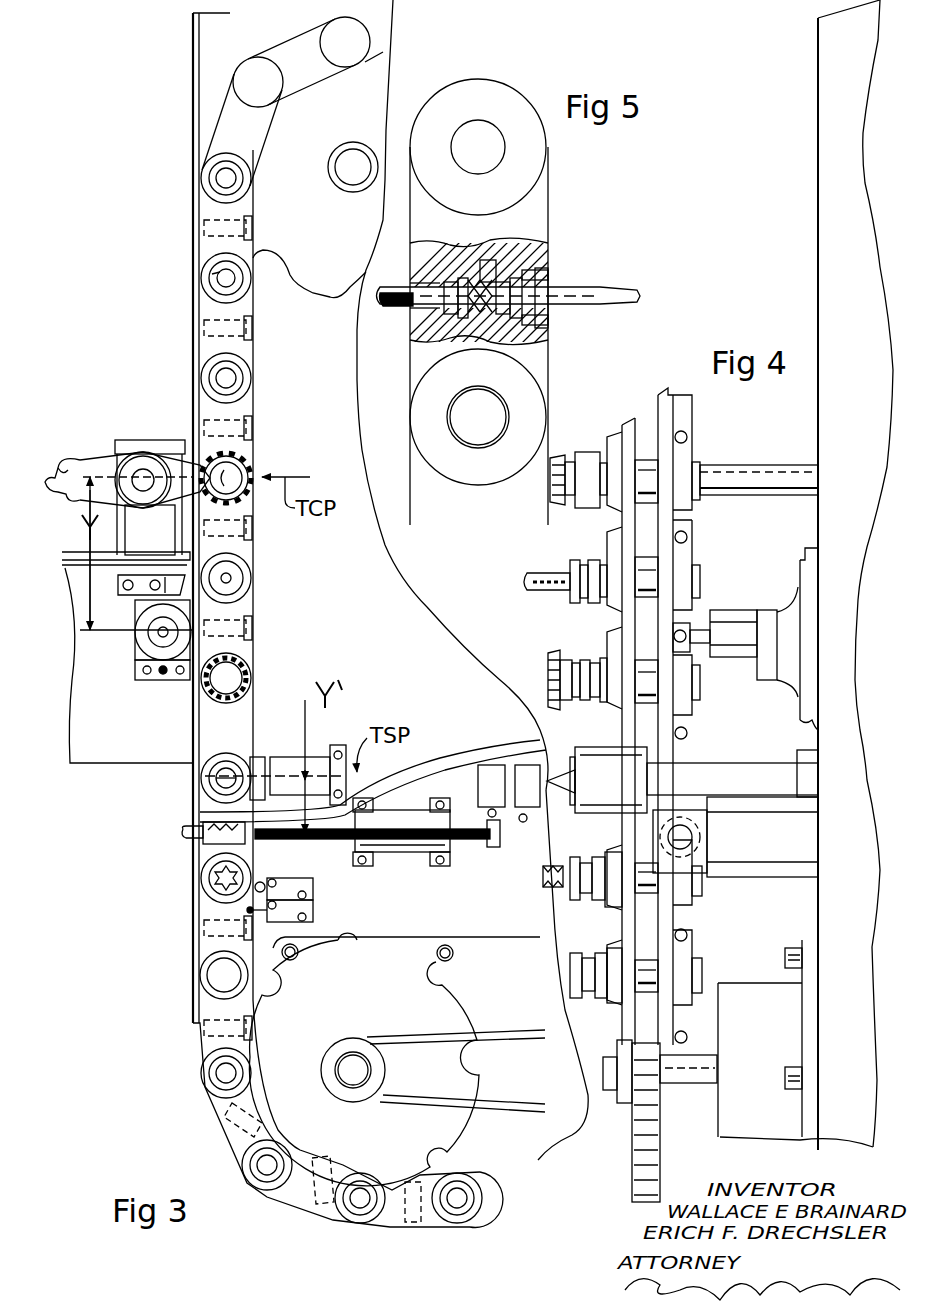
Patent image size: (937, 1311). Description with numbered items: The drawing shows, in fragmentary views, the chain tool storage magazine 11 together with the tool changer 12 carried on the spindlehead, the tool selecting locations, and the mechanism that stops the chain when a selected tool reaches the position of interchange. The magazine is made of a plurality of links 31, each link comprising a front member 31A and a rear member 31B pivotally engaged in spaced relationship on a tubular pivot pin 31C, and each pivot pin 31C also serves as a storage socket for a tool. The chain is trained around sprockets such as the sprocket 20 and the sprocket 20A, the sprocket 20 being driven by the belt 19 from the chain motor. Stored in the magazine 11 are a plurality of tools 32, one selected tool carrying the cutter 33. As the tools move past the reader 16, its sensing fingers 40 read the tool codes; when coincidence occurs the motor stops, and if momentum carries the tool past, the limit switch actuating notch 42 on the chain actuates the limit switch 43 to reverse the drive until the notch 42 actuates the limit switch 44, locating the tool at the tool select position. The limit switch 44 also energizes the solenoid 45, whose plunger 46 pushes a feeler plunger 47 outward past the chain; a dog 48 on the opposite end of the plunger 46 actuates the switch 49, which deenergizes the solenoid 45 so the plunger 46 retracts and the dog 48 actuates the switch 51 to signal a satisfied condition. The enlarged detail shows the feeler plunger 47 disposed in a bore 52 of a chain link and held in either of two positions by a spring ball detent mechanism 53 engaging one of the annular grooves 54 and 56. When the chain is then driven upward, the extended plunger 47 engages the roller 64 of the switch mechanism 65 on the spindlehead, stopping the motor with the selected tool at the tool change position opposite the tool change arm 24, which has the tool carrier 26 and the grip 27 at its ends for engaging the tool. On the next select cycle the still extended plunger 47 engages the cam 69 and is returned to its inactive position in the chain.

In FIG. 3, the magazine 11 is at (188, 163).
In FIG. 4, the magazine 11 is at (740, 452).
In FIG. 3, the tool changer 12 is at (80, 386).
In FIG. 3, the reader 16 is at (320, 747).
In FIG. 3, the belt 19 is at (508, 1030).
In FIG. 3, the sprocket 20 is at (368, 1004).
In FIG. 4, the sprocket 20 is at (650, 1095).
In FIG. 3, the sprocket 20A is at (318, 194).
In FIG. 3, the tool change arm 24 is at (112, 463).
In FIG. 3, the tool carrier 26 is at (97, 457).
In FIG. 3, the grip 27 is at (255, 458).
In FIG. 4, the link 31 is at (687, 452).
In FIG. 4, the front member 31A is at (630, 540).
In FIG. 3, the rear member 31B is at (252, 558).
In FIG. 4, the rear member 31B is at (685, 697).
In FIG. 4, the tubular pivot pin 31C is at (650, 577).
In FIG. 3, the tool 32 is at (258, 290).
In FIG. 4, the tool 32 is at (563, 594).
In FIG. 3, the cutter 33 is at (237, 773).
In FIG. 3, the sensing fingers 40 is at (255, 760).
In FIG. 3, the limit switch actuating notch 42 is at (248, 412).
In FIG. 3, the limit switch 43 is at (307, 885).
In FIG. 3, the limit switch 44 is at (307, 913).
In FIG. 3, the solenoid 45 is at (407, 843).
In FIG. 3, the plunger 46 is at (283, 830).
In FIG. 5, the plunger 46 is at (598, 288).
In FIG. 3, the feeler plunger 47 is at (246, 336).
In FIG. 5, the feeler plunger 47 is at (388, 300).
In FIG. 4, the feeler plunger 47 is at (687, 432).
In FIG. 3, the dog 48 is at (495, 840).
In FIG. 3, the switch 49 is at (497, 775).
In FIG. 3, the switch 51 is at (527, 770).
In FIG. 5, the bore 52 is at (460, 280).
In FIG. 4, the bore 52 is at (690, 950).
In FIG. 5, the spring ball detent mechanism 53 is at (547, 241).
In FIG. 5, the annular groove 54 is at (460, 318).
In FIG. 5, the annular groove 56 is at (490, 318).
In FIG. 3, the roller 64 is at (143, 633).
In FIG. 3, the switch mechanism 65 is at (138, 678).
In FIG. 3, the cam 69 is at (163, 577).